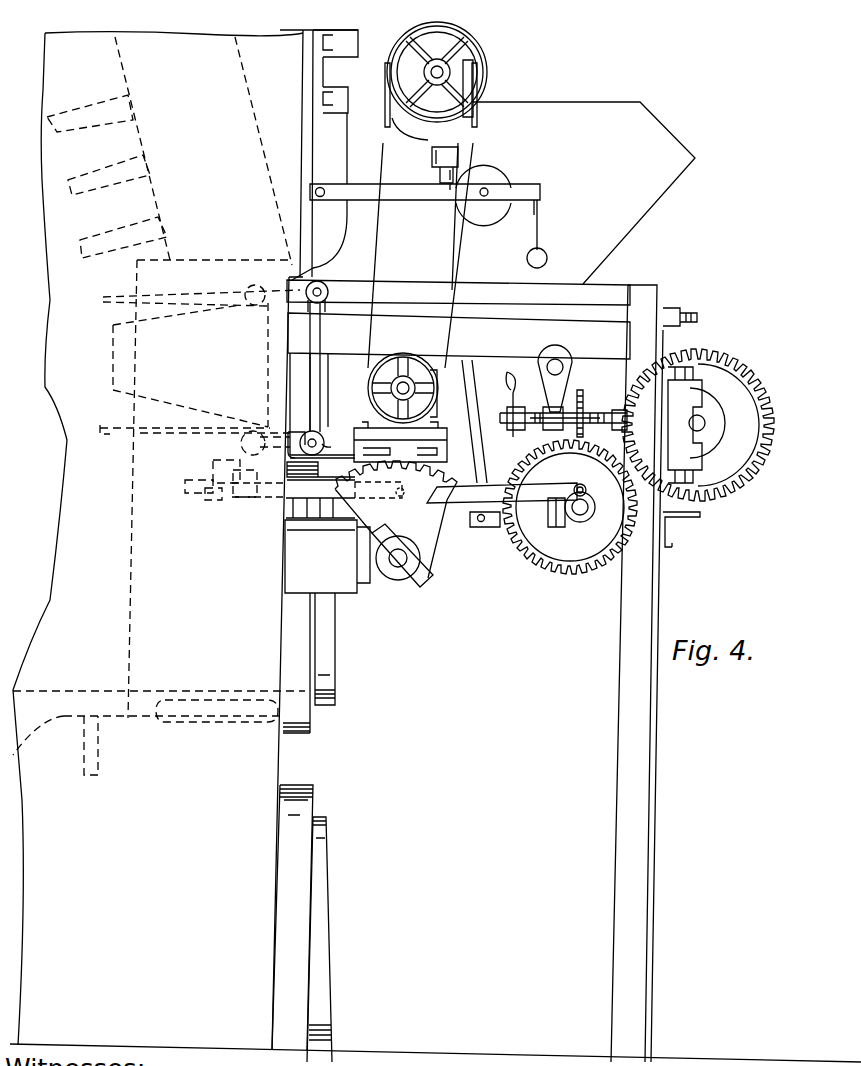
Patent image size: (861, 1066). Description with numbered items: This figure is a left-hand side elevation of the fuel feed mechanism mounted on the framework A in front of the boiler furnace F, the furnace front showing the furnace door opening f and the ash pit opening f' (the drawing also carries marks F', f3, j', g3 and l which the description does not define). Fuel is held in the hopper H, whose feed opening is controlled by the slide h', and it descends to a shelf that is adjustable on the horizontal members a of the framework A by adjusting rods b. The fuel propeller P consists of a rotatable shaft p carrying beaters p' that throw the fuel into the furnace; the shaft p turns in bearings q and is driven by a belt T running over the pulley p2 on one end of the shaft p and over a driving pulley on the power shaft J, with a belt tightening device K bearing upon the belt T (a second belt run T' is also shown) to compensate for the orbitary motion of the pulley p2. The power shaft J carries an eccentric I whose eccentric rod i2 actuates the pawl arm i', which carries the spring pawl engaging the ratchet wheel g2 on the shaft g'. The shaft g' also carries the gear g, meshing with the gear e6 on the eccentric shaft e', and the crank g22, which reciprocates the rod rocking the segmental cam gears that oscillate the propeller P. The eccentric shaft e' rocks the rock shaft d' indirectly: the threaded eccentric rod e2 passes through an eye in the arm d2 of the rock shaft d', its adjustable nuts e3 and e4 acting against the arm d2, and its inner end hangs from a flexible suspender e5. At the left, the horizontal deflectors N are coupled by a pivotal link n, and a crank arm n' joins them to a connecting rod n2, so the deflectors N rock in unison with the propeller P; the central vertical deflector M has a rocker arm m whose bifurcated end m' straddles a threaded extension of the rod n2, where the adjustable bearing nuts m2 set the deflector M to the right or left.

The power shaft J is at (441, 66).
The wheel bracket j' is at (487, 68).
The slide h' is at (455, 87).
The eccentric I is at (425, 154).
The belt T is at (383, 255).
The belt T' is at (466, 255).
The belt tightening device K is at (428, 216).
The hopper H is at (584, 193).
The horizontal members a is at (458, 315).
The cross beam f3 is at (296, 335).
The framework A is at (655, 673).
The adjusting rods b is at (682, 305).
The boiler furnace F is at (300, 663).
The frame bracket F' is at (317, 265).
The furnace door opening f is at (331, 649).
The ash pit opening f' is at (328, 939).
The pivotal link n is at (312, 369).
The connecting rod n2 is at (293, 477).
The crank arm n' is at (261, 464).
The rotatable shaft p is at (333, 448).
The fuel propeller P is at (403, 388).
The beaters p' is at (431, 343).
The pulley p2 is at (407, 356).
The bearings q is at (354, 431).
The ratchet wheel g2 is at (396, 524).
The crank g22 is at (600, 530).
The pawl arm i' is at (502, 523).
The gear g is at (570, 521).
The shaft g' is at (582, 498).
The crank pin g3 is at (565, 483).
The gear e6 is at (715, 425).
The bearing block l is at (702, 425).
The eccentric shaft e' is at (688, 435).
The rock shaft d' is at (554, 368).
The arm d2 is at (583, 390).
The eccentric rod e2 is at (556, 417).
The adjustable shoulder e3 is at (584, 412).
The adjustable shoulder e4 is at (520, 430).
The flexible suspender e5 is at (512, 401).
The eccentric rod i2 is at (477, 421).
The horizontal deflectors N is at (195, 295).
The vertical deflector M is at (184, 405).
The rocker arm m is at (226, 458).
The bifurcated end m' is at (218, 509).
The adjustable bearing nuts m2 is at (240, 497).